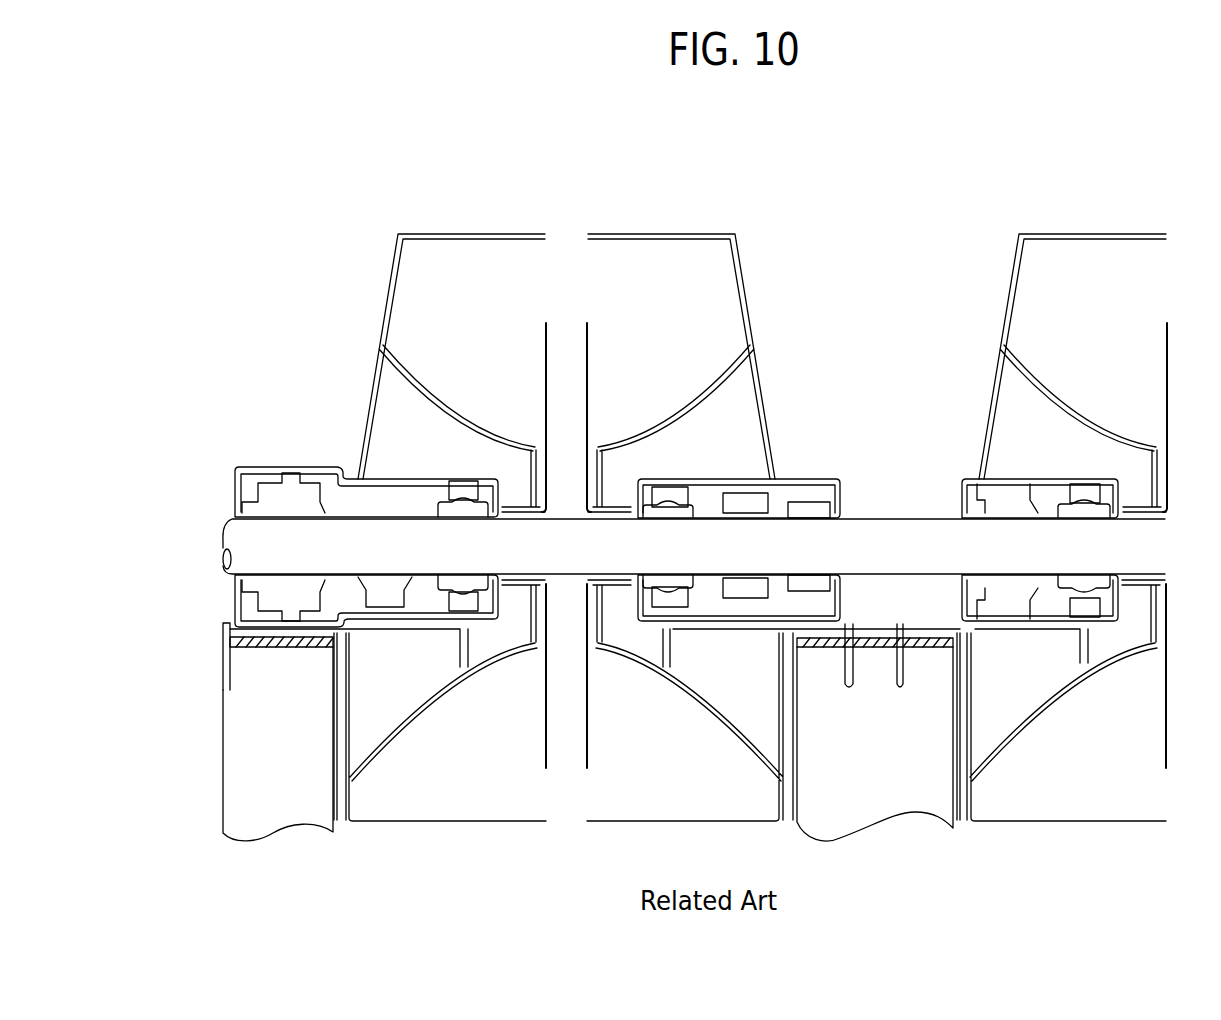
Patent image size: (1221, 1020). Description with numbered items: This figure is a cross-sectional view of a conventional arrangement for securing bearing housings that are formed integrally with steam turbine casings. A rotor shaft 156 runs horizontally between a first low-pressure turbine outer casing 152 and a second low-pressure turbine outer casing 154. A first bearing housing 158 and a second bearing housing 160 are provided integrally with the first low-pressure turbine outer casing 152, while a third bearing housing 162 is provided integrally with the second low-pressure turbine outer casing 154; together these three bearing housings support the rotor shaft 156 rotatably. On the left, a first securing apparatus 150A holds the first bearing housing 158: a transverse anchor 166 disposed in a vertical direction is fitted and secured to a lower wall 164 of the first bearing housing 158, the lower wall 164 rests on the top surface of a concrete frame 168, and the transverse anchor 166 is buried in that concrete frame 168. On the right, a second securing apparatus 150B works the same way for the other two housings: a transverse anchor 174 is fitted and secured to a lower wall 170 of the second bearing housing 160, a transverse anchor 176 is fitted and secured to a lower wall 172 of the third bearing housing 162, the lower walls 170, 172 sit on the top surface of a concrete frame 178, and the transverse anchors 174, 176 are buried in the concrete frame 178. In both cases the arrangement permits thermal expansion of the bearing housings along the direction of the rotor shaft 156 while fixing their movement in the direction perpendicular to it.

The first securing apparatus 150A is at (252, 670).
The second securing apparatus 150B is at (874, 690).
The first low-pressure turbine outer casing 152 is at (634, 234).
The second low-pressure turbine outer casing 154 is at (1014, 250).
The rotor shaft 156 is at (886, 518).
The first bearing housing 158 is at (302, 466).
The second bearing housing 160 is at (800, 478).
The third bearing housing 162 is at (975, 481).
The lower wall 164 is at (237, 619).
The transverse anchor 166 is at (223, 660).
The concrete frame 168 is at (292, 783).
The lower wall 170 is at (735, 628).
The lower wall 172 is at (1027, 628).
The transverse anchor 174 is at (855, 634).
The transverse anchor 176 is at (892, 623).
The concrete frame 178 is at (875, 803).